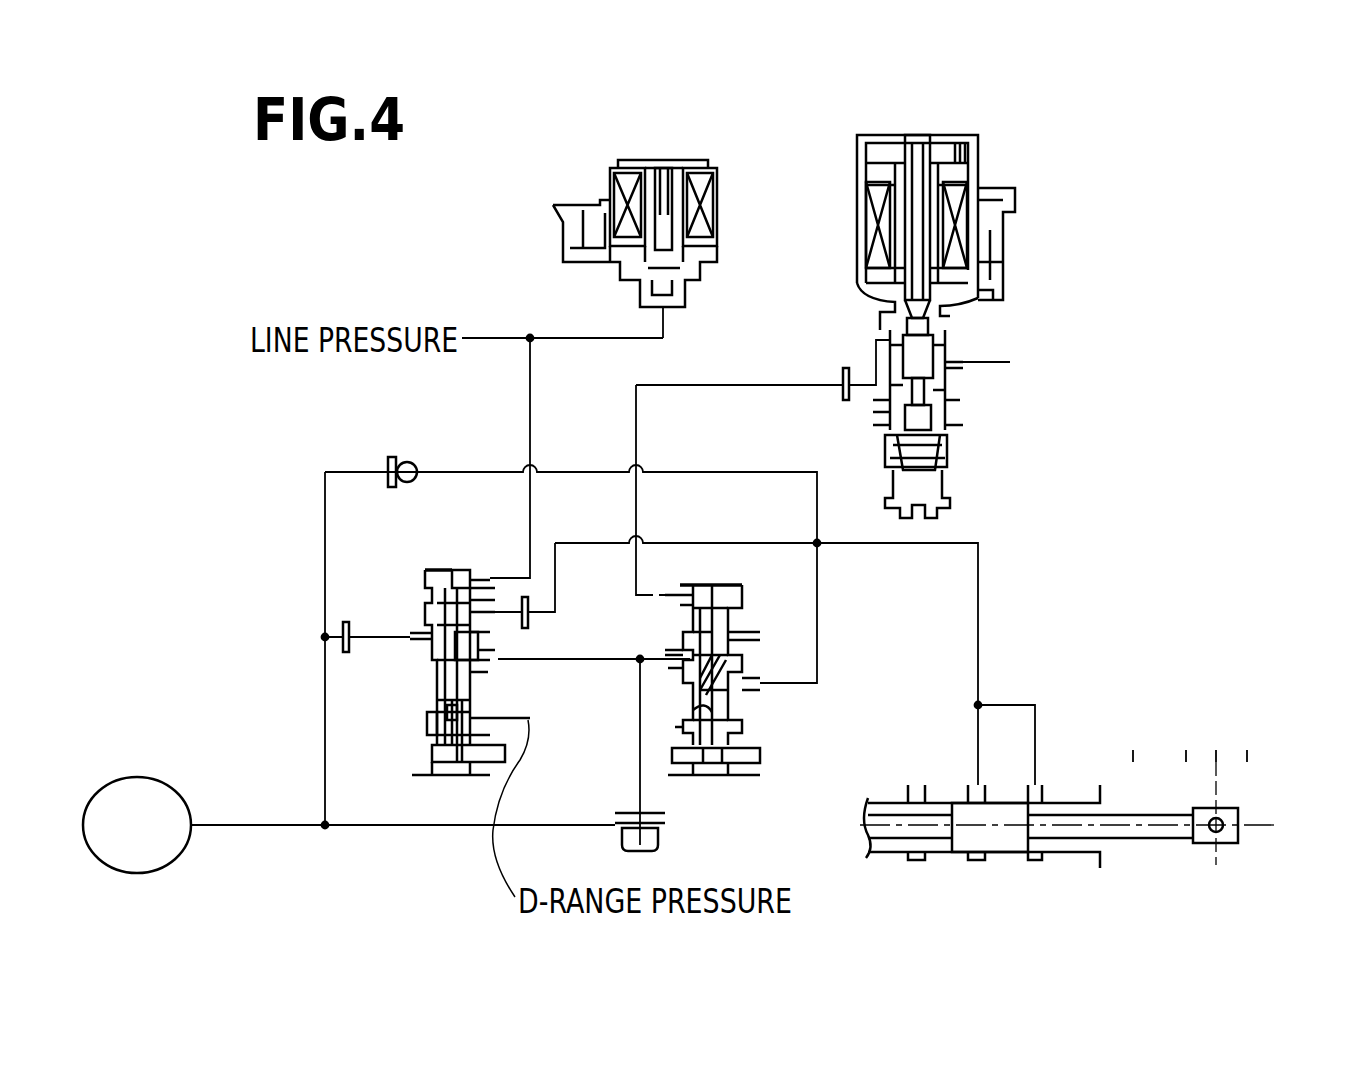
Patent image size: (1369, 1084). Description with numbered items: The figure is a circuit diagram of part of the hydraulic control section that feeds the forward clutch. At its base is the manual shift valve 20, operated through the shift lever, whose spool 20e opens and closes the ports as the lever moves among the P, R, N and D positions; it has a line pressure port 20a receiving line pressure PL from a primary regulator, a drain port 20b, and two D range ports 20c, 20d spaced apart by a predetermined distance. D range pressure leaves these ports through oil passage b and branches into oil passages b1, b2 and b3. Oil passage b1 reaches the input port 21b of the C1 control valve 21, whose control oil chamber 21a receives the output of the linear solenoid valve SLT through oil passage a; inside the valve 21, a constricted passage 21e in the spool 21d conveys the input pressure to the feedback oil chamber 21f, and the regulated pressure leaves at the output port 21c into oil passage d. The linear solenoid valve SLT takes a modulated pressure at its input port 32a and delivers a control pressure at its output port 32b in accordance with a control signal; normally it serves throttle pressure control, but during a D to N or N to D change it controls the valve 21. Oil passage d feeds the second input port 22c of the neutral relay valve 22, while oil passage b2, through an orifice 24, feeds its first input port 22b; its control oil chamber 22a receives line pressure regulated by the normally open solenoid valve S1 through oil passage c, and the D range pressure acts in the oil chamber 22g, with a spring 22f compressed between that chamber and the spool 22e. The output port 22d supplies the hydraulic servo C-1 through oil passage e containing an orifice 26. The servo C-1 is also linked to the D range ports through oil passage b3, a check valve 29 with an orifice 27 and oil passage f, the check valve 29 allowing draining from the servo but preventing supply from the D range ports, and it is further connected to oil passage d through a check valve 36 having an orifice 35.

The solenoid valve S1 is at (728, 152).
The linear solenoid valve SLT is at (1022, 170).
The input port 32a is at (963, 372).
The output port 32b is at (873, 383).
The orifice 27 is at (390, 457).
The check valve 29 is at (415, 463).
The neutral relay valve 22 is at (400, 555).
The control oil chamber 22a is at (492, 577).
The first input port 22b is at (495, 616).
The second input port 22c is at (495, 661).
The output port 22d is at (420, 632).
The spool 22e is at (428, 668).
The spring 22f is at (428, 710).
The oil chamber 22g is at (485, 718).
The orifice 24 is at (530, 605).
The orifice 26 is at (346, 652).
The C1 control valve 21 is at (782, 603).
The control oil chamber 21a is at (733, 600).
The input port 21b is at (762, 690).
The output port 21c is at (675, 653).
The spool 21d is at (683, 668).
The constricted passage 21e is at (730, 700).
The feedback oil chamber 21f is at (683, 727).
The manual shift valve 20 is at (1090, 735).
The line pressure port 20a is at (908, 790).
The drain port 20b is at (1100, 808).
The D range port 20c is at (968, 783).
The D range port 20d is at (1028, 783).
The spool 20e is at (1005, 845).
The orifice 35 is at (668, 812).
The check valve 36 is at (660, 842).
The hydraulic servo C-1 is at (137, 825).
The oil passage a is at (757, 383).
The oil passage b is at (939, 545).
The oil passage b1 is at (818, 642).
The oil passage b2 is at (709, 542).
The oil passage b3 is at (706, 470).
The oil passage c is at (532, 400).
The oil passage d is at (582, 657).
The oil passage e is at (322, 636).
The oil passage f is at (322, 680).